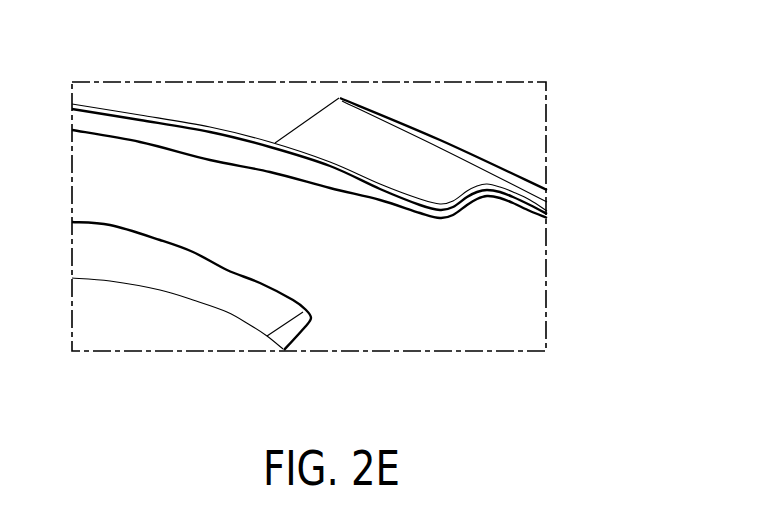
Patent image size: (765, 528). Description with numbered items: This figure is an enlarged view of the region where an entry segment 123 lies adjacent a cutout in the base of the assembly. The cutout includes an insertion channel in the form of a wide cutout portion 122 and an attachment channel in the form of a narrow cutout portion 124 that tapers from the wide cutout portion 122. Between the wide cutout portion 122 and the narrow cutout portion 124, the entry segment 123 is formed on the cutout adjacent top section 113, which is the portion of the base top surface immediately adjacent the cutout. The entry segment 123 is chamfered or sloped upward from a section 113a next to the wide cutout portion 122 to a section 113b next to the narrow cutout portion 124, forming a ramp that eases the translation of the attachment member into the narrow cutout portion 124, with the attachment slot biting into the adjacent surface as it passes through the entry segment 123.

The cutout adjacent top section 113 is at (325, 117).
The section adjacent the wide cutout portion 113a is at (450, 98).
The section adjacent the narrow cutout portion 113b is at (360, 96).
The wide cutout portion 122 is at (485, 303).
The entry segment 123 is at (375, 138).
The narrow cutout portion 124 is at (255, 201).